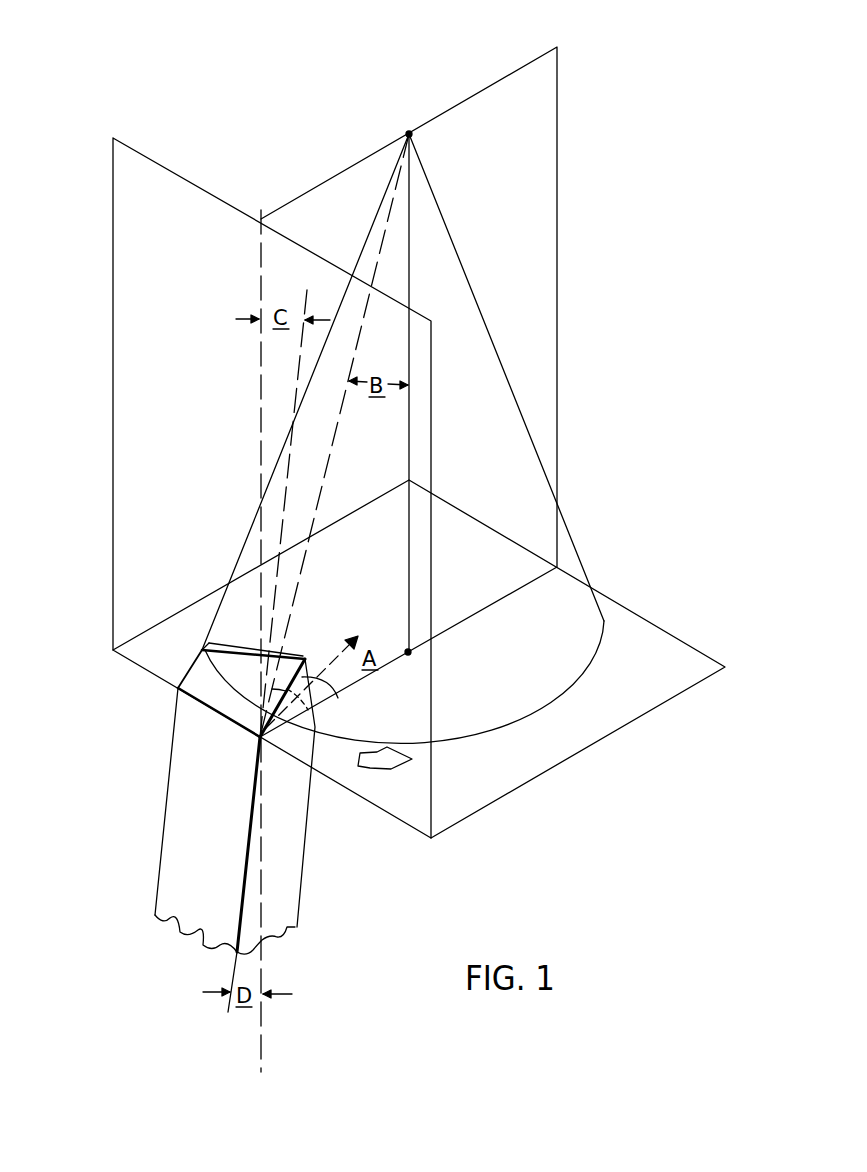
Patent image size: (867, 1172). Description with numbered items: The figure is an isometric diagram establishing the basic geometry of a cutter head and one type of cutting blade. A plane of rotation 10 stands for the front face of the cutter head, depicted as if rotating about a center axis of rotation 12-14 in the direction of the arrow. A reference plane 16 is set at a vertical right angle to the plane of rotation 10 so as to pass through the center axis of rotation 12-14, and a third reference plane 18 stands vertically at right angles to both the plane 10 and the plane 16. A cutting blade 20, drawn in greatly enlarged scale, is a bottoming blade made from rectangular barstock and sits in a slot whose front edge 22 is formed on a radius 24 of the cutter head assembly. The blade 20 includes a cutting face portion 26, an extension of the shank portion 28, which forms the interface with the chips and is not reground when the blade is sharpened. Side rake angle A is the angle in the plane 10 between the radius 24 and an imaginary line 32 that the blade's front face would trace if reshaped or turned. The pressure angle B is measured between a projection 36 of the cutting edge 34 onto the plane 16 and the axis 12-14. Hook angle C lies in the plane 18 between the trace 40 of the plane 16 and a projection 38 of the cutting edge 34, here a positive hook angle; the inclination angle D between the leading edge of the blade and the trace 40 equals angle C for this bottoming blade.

The plane of rotation 10 is at (505, 750).
The center axis of rotation (upper end point) 12 is at (407, 132).
The center axis of rotation (lower end point) 14 is at (409, 656).
The reference plane 16 is at (509, 174).
The third reference plane 18 is at (169, 285).
The cutting blade 20 is at (152, 860).
The front edge 22 is at (316, 727).
The radius 24 is at (381, 669).
The cutting face portion 26 is at (317, 708).
The shank portion 28 is at (289, 843).
The imaginary line 32 is at (340, 660).
The cutting edge 34 is at (266, 697).
The projection of the cutting edge 36 is at (333, 460).
The projection of the cutting edge onto plane 18 38 is at (288, 495).
The trace 40 is at (258, 412).